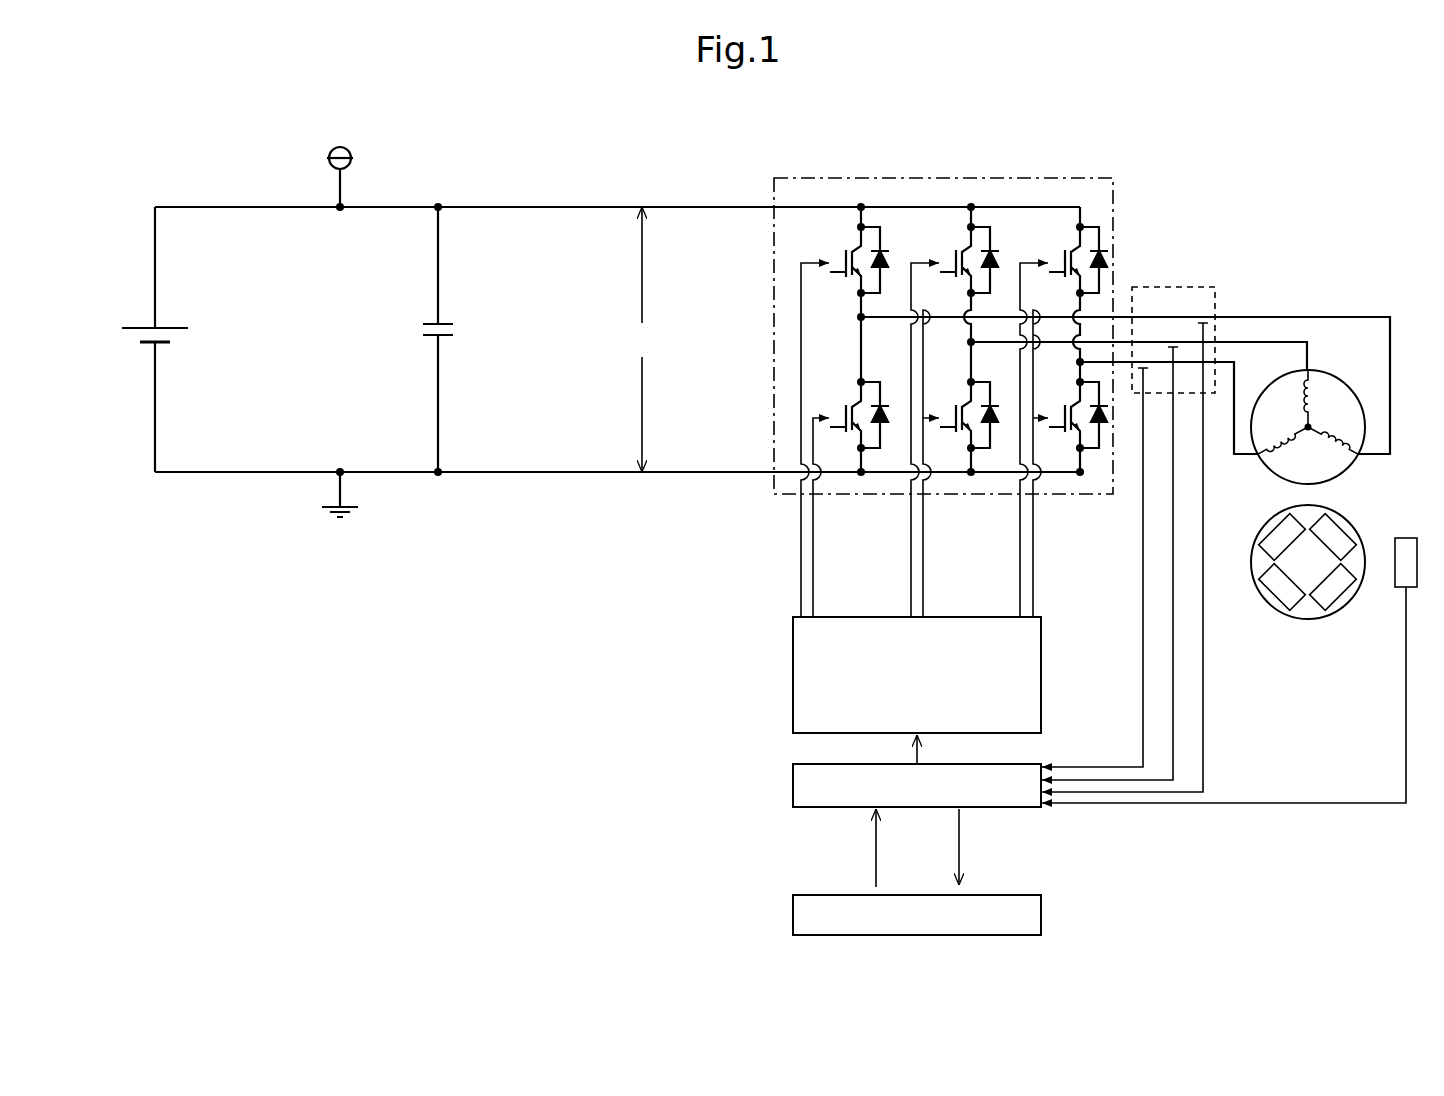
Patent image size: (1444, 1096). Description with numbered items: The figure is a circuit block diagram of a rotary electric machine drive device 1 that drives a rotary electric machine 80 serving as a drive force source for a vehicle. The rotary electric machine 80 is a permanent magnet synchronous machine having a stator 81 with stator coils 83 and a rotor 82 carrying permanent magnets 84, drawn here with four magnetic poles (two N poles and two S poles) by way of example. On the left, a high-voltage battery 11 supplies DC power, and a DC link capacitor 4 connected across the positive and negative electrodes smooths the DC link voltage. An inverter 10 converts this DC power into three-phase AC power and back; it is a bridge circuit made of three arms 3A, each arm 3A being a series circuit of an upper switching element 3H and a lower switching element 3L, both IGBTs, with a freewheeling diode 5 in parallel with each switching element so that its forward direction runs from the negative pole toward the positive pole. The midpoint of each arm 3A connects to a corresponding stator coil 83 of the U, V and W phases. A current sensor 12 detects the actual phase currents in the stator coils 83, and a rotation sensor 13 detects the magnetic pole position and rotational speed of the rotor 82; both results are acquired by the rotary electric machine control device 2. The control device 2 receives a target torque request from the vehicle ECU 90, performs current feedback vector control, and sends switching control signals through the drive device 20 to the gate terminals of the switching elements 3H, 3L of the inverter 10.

The rotary electric machine drive device 1 is at (530, 143).
The rotary electric machine control device 2 is at (1010, 808).
The arm 3A is at (825, 195).
The upper switching element 3H is at (762, 340).
The lower switching element 3L is at (831, 389).
The DC link capacitor 4 is at (423, 331).
The freewheeling diode 5 is at (887, 244).
The inverter 10 is at (1113, 186).
The high-voltage battery 11 is at (134, 358).
The current sensor 12 is at (1160, 285).
The rotation sensor 13 is at (1407, 538).
The drive device 20 is at (1041, 637).
The rotary electric machine 80 is at (1379, 293).
The stator 81 is at (1336, 478).
The rotor 82 is at (1262, 600).
The stator coil 83 is at (1297, 460).
The permanent magnet 84 is at (1321, 606).
The vehicle ECU 90 is at (793, 895).